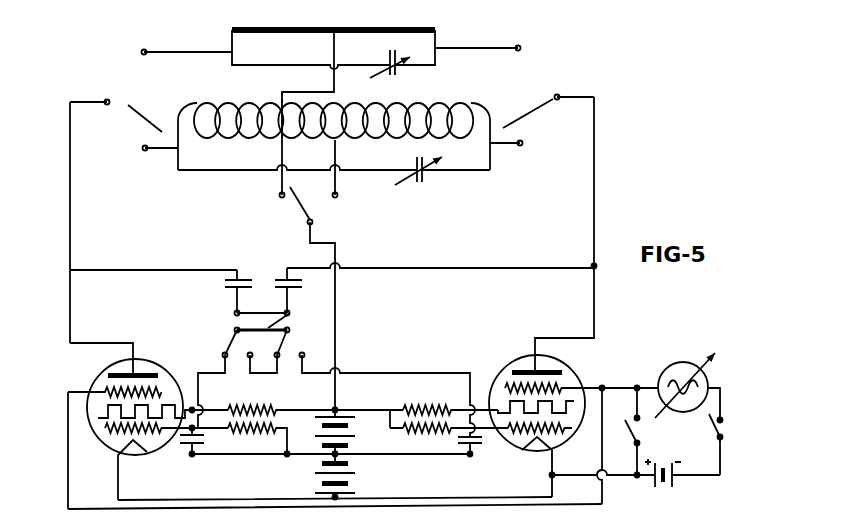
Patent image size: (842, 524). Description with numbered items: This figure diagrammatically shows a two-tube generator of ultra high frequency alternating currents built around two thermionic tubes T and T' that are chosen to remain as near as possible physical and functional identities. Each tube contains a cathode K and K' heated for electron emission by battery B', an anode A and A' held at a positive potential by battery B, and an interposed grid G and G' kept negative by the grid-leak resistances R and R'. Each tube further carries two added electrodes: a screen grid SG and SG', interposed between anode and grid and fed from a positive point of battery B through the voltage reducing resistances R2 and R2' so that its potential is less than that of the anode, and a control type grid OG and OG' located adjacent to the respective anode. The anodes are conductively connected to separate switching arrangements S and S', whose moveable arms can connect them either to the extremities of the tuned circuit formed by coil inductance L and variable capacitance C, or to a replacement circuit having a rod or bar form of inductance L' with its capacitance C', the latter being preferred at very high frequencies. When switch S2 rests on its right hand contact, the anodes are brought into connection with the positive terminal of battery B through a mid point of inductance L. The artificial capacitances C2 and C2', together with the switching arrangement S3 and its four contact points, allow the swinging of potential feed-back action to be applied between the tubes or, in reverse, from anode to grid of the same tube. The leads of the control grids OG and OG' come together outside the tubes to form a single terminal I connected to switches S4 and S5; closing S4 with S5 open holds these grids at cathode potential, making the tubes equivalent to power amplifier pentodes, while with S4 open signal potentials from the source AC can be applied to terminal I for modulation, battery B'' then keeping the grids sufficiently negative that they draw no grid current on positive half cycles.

The rod or bar form of inductance L' is at (331, 71).
The variable capacitance C' is at (401, 70).
The inductance L is at (333, 139).
The variable capacitance C is at (426, 175).
The switching arrangement S' is at (116, 101).
The switching arrangement S is at (548, 97).
The switch S2 is at (303, 207).
The artificial capacitance C2' is at (234, 277).
The artificial capacitance C2 is at (288, 277).
The switching arrangement S3 is at (288, 320).
The thermionic tube T' is at (131, 420).
The anode A' is at (114, 360).
The control type grid OG' is at (128, 425).
The screen grid electrode SG' is at (109, 393).
The grid electrode G' is at (151, 441).
The cathode K' is at (120, 470).
The voltage reducing resistance R2' is at (315, 400).
The grid-leak resistance R' is at (255, 439).
The battery B is at (346, 413).
The battery B' is at (352, 475).
The voltage reducing resistance R2 is at (450, 398).
The grid-leak resistance R is at (449, 433).
The thermionic tube T is at (541, 416).
The anode A is at (552, 360).
The control type grid OG is at (543, 420).
The screen grid electrode SG is at (564, 387).
The grid electrode G is at (554, 429).
The cathode K is at (524, 467).
The terminal I is at (637, 383).
The source of signal potentials AC is at (670, 363).
The switch S4 is at (642, 430).
The switch S5 is at (715, 430).
The battery B'' is at (682, 486).